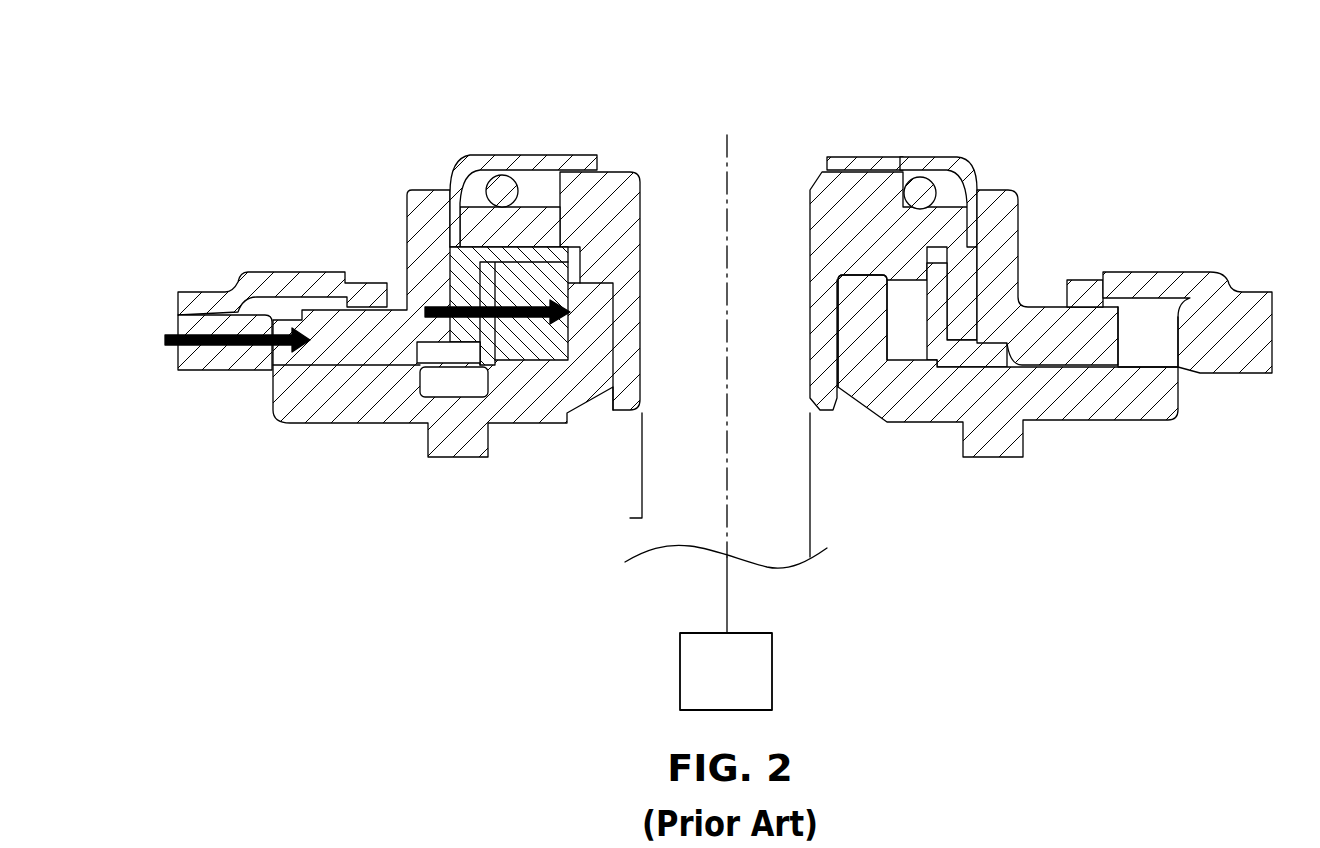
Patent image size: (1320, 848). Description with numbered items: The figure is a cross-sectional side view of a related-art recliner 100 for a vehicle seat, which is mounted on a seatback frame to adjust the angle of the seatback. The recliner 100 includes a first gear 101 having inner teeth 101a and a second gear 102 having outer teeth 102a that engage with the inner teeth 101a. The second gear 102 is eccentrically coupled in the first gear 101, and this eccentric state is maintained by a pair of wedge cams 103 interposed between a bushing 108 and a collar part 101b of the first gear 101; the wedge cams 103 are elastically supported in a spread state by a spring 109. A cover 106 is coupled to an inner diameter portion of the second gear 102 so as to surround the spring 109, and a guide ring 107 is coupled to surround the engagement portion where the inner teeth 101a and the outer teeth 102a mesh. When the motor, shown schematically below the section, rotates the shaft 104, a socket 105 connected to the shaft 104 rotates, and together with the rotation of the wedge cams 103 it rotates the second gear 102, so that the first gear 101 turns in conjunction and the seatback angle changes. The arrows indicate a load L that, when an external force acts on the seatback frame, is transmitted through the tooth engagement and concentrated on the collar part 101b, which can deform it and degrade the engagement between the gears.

The recliner 100 is at (672, 70).
The load L is at (437, 307).
The first gear 101 is at (1130, 410).
The inner teeth 101a is at (1167, 333).
The collar part 101b is at (857, 320).
The second gear 102 is at (1032, 323).
The outer teeth 102a is at (1125, 317).
The wedge cams 103 is at (528, 338).
The shaft 104 is at (630, 520).
The socket 105 is at (833, 206).
The cover 106 is at (864, 162).
The guide ring 107 is at (1247, 298).
The bushing 108 is at (962, 347).
The spring 109 is at (922, 187).